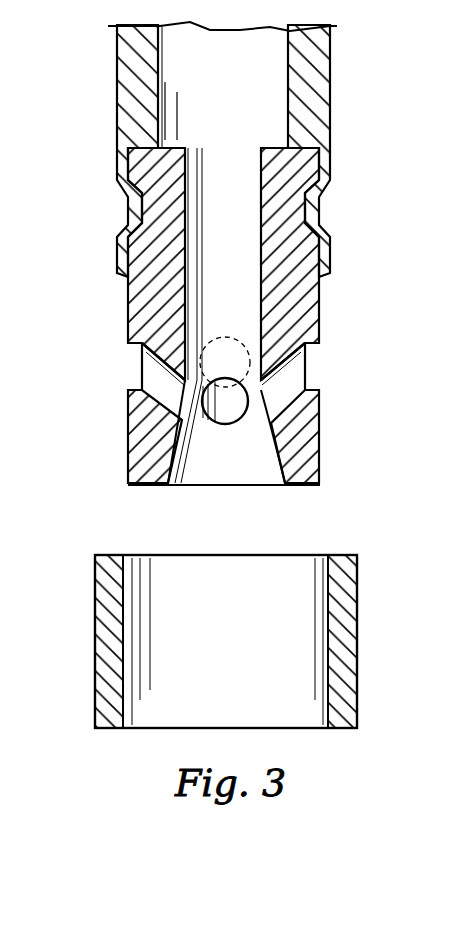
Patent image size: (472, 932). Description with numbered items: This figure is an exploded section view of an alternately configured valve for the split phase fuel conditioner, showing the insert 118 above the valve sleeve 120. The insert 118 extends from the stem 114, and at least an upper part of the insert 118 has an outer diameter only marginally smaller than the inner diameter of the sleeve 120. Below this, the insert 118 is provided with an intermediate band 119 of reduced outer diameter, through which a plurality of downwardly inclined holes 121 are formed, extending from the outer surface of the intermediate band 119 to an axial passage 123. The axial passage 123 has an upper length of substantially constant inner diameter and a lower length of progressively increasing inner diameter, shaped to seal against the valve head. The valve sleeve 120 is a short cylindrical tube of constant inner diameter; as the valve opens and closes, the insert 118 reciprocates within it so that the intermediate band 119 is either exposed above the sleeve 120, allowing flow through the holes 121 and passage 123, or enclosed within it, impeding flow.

The stem 114 is at (130, 92).
The insert 118 is at (148, 305).
The intermediate band 119 is at (143, 353).
The valve sleeve 120 is at (343, 633).
The downwardly inclined holes 121 is at (157, 380).
The axial passage 123 is at (228, 292).